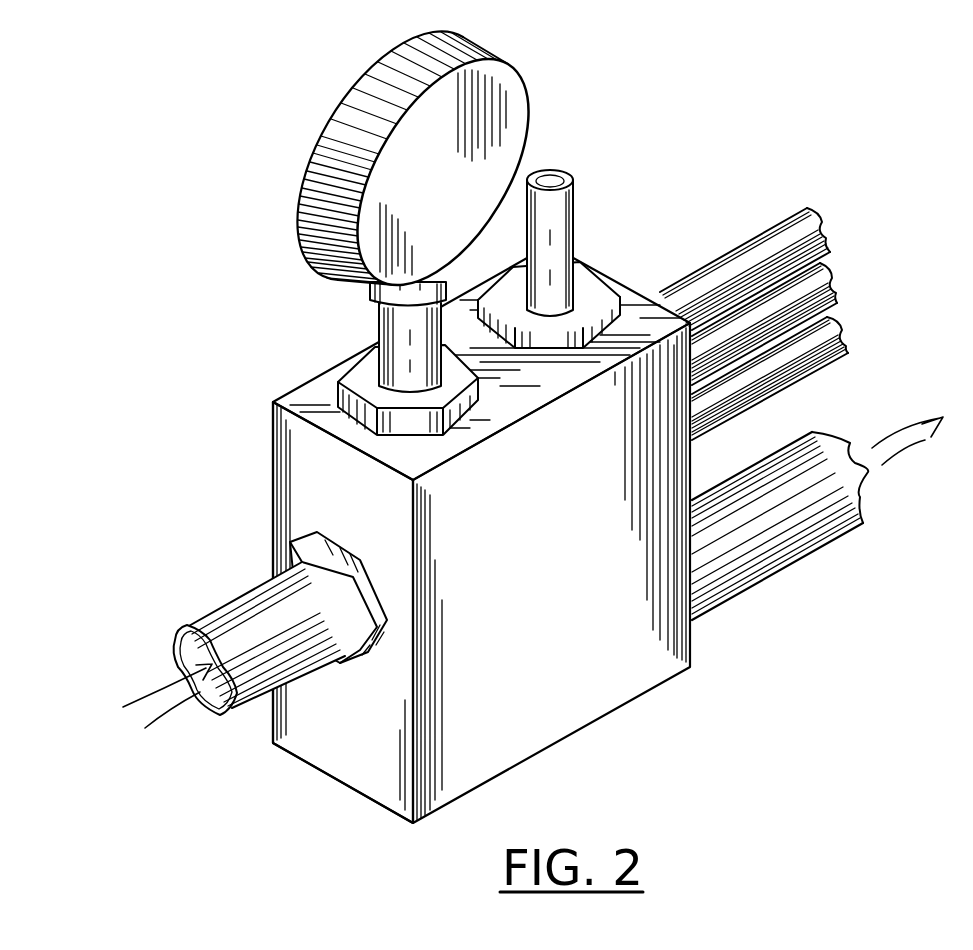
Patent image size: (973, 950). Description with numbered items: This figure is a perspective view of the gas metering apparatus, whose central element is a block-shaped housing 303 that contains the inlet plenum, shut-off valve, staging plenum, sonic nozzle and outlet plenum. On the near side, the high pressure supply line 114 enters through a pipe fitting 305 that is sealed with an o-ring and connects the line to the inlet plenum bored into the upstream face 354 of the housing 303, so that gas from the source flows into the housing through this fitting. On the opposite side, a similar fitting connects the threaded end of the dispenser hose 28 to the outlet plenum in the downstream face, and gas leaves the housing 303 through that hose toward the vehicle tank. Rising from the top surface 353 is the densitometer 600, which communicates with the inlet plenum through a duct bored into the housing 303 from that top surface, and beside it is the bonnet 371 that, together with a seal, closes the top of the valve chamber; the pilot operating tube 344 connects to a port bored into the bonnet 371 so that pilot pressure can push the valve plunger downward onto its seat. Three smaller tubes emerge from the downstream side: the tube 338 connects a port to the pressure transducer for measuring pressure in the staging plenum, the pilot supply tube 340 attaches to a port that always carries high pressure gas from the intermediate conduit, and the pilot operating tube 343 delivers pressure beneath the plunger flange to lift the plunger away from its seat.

The dispenser hose 28 is at (802, 560).
The high pressure supply line 114 is at (215, 627).
The housing 303 is at (283, 386).
The pipe fitting 305 is at (292, 548).
The tube 338 is at (848, 328).
The pilot supply tube 340 is at (838, 285).
The pilot operating tube 343 is at (826, 234).
The pilot operating tube 344 is at (574, 198).
The top surface 353 is at (483, 290).
The upstream face 354 is at (350, 752).
The bonnet 371 is at (620, 280).
The densitometer 600 is at (540, 104).